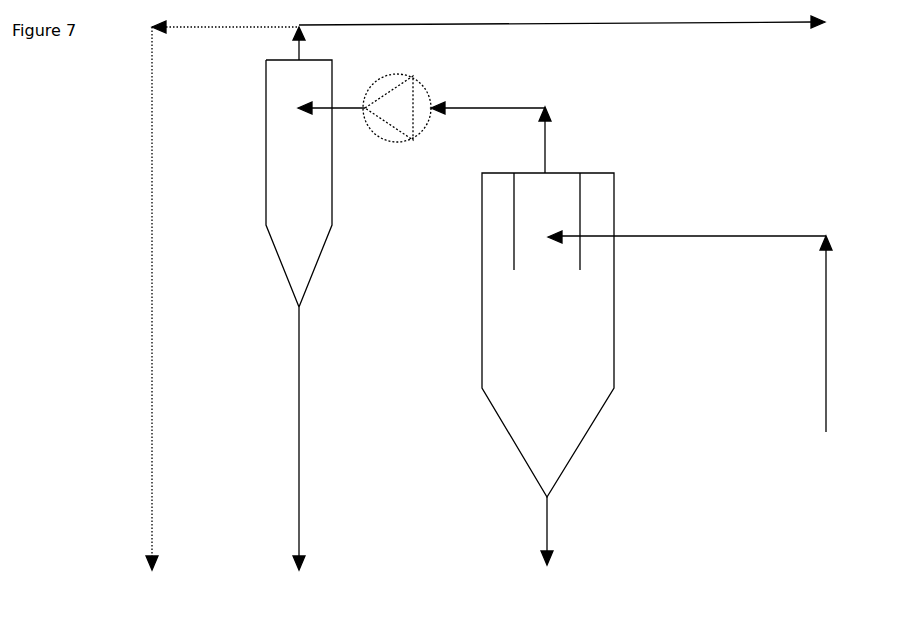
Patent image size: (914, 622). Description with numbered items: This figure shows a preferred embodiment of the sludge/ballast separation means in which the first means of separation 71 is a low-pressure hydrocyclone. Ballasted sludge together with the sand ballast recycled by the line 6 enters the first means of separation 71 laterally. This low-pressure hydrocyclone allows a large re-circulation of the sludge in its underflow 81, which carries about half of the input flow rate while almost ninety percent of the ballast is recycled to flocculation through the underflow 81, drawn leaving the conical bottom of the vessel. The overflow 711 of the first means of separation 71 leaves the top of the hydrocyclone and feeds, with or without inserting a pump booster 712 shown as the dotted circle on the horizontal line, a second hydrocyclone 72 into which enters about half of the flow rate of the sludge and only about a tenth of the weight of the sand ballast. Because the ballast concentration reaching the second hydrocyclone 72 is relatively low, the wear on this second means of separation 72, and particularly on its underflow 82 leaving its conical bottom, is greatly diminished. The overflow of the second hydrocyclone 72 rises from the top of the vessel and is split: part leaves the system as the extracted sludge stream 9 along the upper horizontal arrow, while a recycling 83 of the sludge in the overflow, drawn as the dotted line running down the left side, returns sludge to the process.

The line 6 is at (728, 331).
The gas outlet stream 9 is at (562, 43).
The means of separation 71 is at (589, 335).
The second means of sludge/ballast separation 72 is at (332, 167).
The underflow 81 is at (586, 531).
The underflow 82 is at (338, 438).
The recycling 83 is at (222, 295).
The overflow 711 is at (530, 137).
The pump booster 712 is at (397, 99).